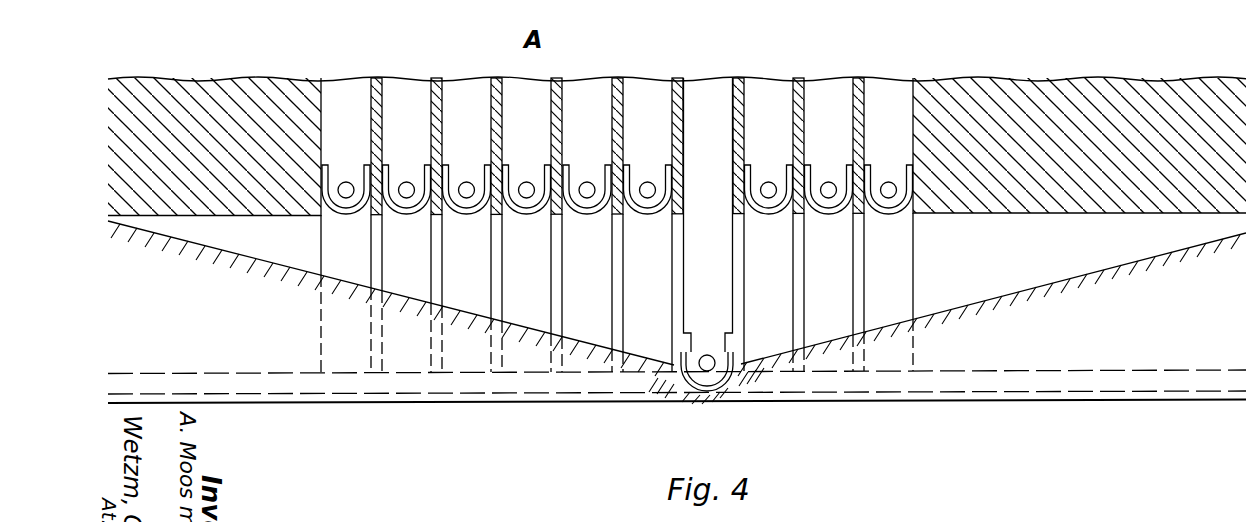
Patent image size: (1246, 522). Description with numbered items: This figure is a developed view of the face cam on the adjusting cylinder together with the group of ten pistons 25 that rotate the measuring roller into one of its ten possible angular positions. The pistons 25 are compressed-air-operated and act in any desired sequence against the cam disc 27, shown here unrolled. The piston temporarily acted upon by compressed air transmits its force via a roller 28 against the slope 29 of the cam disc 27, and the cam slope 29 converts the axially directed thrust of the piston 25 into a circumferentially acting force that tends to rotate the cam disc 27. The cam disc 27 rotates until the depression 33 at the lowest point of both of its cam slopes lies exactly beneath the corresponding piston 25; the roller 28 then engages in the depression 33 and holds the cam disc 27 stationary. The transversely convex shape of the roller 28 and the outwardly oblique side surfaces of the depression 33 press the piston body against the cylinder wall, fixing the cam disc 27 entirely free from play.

The piston 25 is at (718, 100).
The cam disc 27 is at (633, 386).
The roller 28 is at (720, 378).
The slope 29 is at (411, 297).
The depression 33 is at (707, 393).